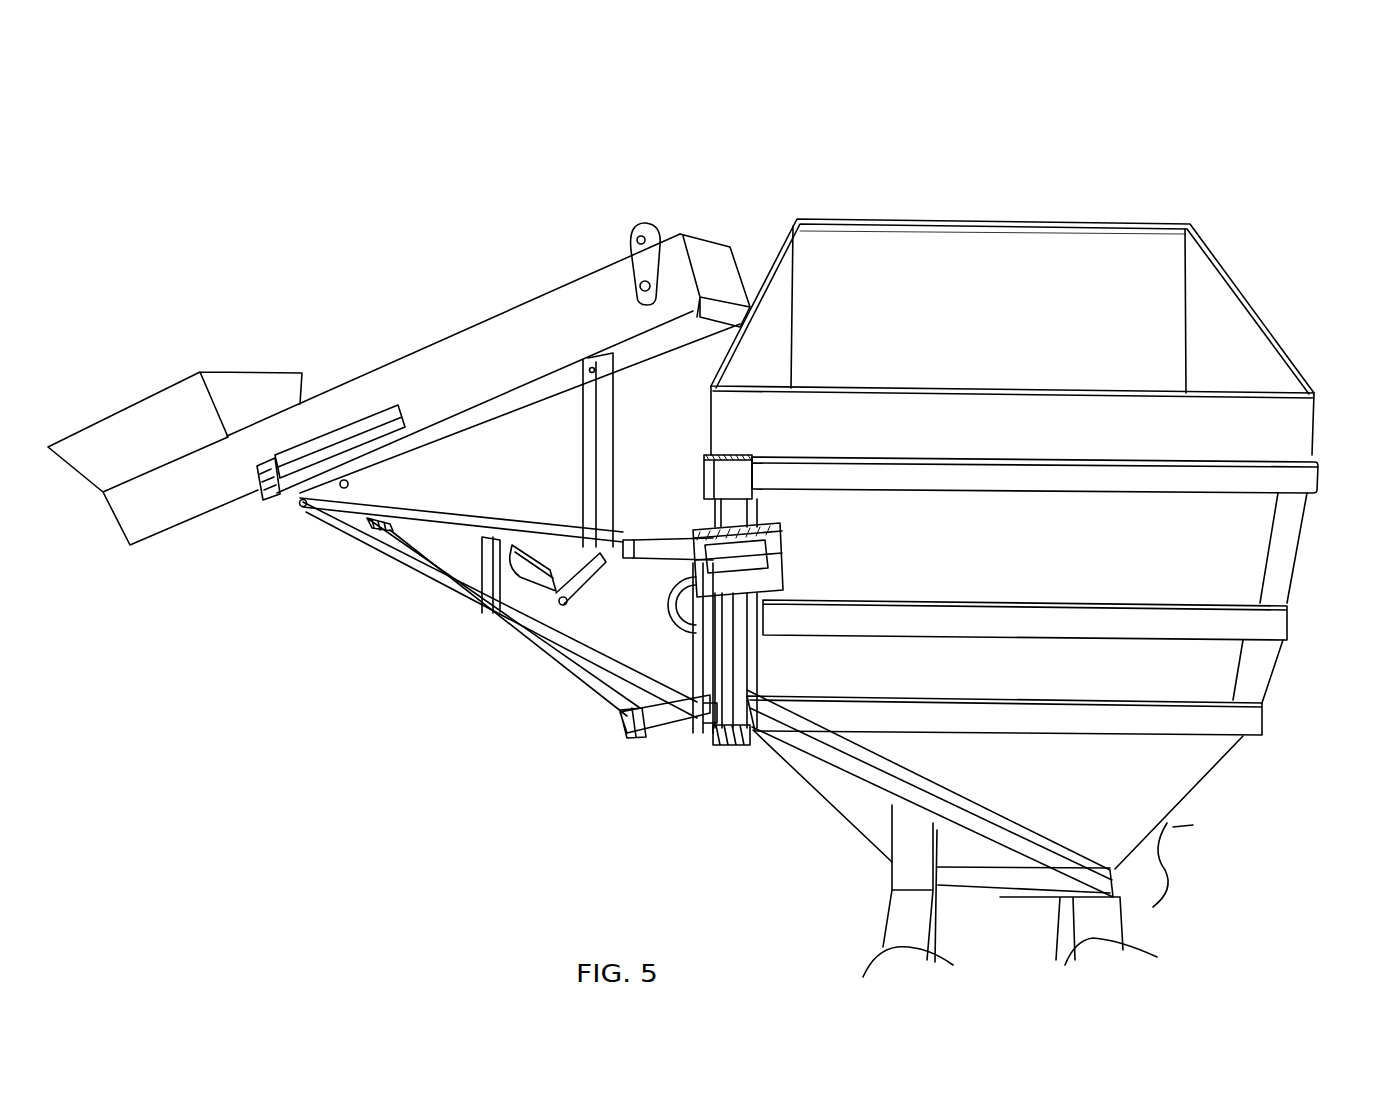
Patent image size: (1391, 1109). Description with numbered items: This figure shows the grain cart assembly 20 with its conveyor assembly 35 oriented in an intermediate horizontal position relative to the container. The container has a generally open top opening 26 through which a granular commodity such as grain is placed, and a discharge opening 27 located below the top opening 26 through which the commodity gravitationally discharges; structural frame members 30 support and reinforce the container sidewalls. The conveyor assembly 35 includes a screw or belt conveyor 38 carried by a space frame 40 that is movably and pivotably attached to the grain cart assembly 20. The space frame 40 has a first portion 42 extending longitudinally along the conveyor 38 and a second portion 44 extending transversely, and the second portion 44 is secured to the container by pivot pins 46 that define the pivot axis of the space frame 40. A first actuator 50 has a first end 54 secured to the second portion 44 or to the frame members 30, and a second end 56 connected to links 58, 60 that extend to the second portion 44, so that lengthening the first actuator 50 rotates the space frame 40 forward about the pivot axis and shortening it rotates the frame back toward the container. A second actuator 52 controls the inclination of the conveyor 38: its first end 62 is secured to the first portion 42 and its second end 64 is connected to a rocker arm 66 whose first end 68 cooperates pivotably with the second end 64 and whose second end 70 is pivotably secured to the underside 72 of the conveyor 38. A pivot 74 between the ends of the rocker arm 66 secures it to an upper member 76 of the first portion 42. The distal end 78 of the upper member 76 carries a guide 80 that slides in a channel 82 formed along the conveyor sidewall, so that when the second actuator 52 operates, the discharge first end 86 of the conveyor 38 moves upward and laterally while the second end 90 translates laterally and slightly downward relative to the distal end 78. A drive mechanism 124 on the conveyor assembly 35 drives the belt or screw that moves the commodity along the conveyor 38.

The grain cart assembly 20 is at (1117, 140).
The top opening 26 is at (1167, 310).
The discharge opening 27 is at (1175, 858).
The frame members 30 is at (1240, 703).
The conveyor assembly 35 is at (488, 228).
The conveyor 38 is at (483, 363).
The space frame 40 is at (535, 654).
The first portion 42 is at (568, 672).
The second portion 44 is at (680, 722).
The pivot pins 46 is at (710, 510).
The first actuator 50 is at (772, 495).
The second actuator 52 is at (493, 606).
The first end 54 is at (747, 630).
The second end 56 is at (780, 577).
The link 58 is at (757, 597).
The link 60 is at (703, 527).
The first end 62 is at (455, 580).
The second end 64 is at (570, 602).
The rocker arm 66 is at (588, 473).
The first end 68 is at (527, 570).
The second end 70 is at (603, 380).
The underside 72 is at (470, 420).
The pivot 74 is at (553, 526).
The upper member 76 is at (435, 518).
The distal end 78 is at (303, 505).
The guide 80 is at (247, 483).
The channel 82 is at (357, 433).
The first end 86 is at (718, 262).
The second end 90 is at (120, 523).
The drive mechanism 124 is at (657, 225).